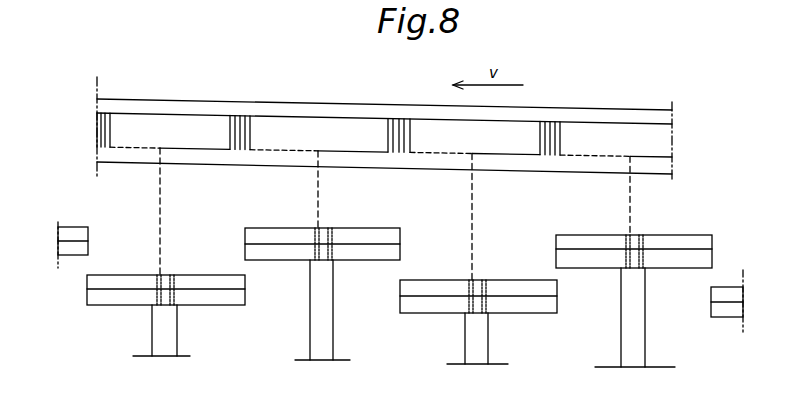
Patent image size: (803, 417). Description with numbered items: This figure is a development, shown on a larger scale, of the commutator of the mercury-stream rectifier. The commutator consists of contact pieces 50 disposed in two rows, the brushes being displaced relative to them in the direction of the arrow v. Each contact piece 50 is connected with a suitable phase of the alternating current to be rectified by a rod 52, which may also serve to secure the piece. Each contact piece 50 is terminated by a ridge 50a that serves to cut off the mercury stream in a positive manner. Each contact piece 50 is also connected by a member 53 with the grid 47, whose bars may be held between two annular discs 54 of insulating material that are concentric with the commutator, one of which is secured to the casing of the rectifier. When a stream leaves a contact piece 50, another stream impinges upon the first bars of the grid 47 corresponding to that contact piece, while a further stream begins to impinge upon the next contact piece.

The grid 47 is at (250, 126).
The contact piece 50 is at (222, 300).
The ridge 50a is at (711, 302).
The rod 52 is at (327, 319).
The member 53 is at (322, 200).
The annular disc 54 is at (175, 104).